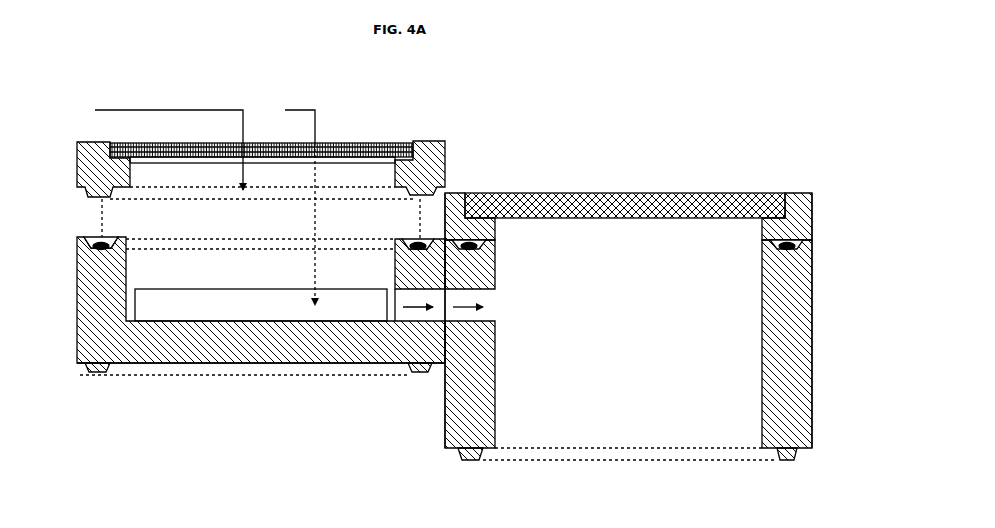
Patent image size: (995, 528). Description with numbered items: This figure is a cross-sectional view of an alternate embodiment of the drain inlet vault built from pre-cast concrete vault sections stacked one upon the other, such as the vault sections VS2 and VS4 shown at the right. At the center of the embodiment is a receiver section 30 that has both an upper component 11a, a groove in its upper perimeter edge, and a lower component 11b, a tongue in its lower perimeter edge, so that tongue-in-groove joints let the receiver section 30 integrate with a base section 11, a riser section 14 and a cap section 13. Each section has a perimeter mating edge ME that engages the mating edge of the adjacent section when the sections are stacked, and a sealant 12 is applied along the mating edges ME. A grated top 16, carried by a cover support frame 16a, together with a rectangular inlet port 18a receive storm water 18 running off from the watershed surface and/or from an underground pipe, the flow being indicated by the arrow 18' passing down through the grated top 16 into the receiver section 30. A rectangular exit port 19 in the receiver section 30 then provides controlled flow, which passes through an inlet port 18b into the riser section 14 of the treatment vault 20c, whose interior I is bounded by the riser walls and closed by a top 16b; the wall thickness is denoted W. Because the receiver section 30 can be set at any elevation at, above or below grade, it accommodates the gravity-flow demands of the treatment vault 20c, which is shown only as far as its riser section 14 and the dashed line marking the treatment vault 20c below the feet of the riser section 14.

The base section 11 is at (78, 298).
The upper component 11a is at (78, 248).
The lower component 11b is at (90, 372).
The sealant 12 is at (407, 242).
The cap section 13 is at (78, 165).
The riser section 14 is at (812, 298).
The grated top 16 is at (202, 143).
The cover support frame 16a is at (132, 163).
The crosshatched plate 16b is at (567, 193).
The storm water 18 is at (156, 146).
The gas flow direction 18' is at (288, 204).
The rectangular inlet port 18a is at (193, 289).
The inlet port 18b is at (495, 300).
The rectangular exit port 19 is at (400, 295).
The treatment vault 20c is at (670, 462).
The receiver section 30 is at (313, 363).
The perimeter mating edge ME is at (88, 189).
The wall W is at (393, 176).
The interior I is at (650, 318).
The vault section VS2 is at (808, 229).
The vault section VS4 is at (812, 318).